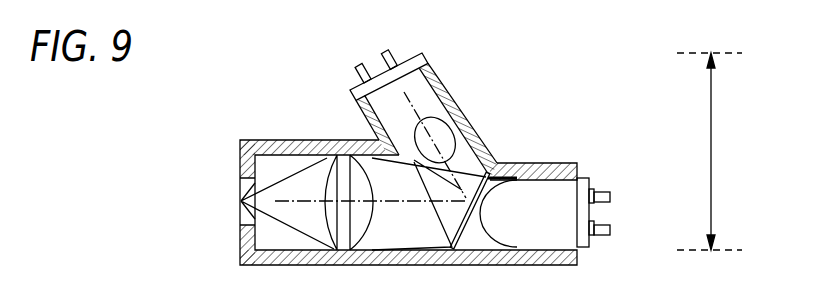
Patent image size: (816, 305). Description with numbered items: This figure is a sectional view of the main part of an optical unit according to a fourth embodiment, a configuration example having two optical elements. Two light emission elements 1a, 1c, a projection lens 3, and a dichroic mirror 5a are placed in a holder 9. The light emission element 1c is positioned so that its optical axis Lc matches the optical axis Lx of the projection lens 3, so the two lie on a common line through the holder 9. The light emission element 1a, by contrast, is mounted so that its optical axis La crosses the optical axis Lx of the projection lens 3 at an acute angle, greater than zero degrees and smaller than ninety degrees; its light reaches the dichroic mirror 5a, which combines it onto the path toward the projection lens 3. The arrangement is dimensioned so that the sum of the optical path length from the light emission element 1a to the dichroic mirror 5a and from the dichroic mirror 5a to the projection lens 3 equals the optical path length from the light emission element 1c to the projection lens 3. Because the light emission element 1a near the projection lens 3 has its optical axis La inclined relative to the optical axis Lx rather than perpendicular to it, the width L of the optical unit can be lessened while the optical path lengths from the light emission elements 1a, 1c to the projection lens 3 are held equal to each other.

The light emission element 1a is at (412, 97).
The optical axis of the light emission element 1a La is at (460, 102).
The light emission element 1c is at (563, 190).
The projection lens 3 is at (346, 235).
The dichroic mirror 5a is at (465, 265).
The holder 9 is at (560, 265).
The width of the optical unit L is at (709, 151).
The optical axis of the projection lens Lx is at (298, 168).
The optical axis of the light emission element 1c Lc is at (399, 205).